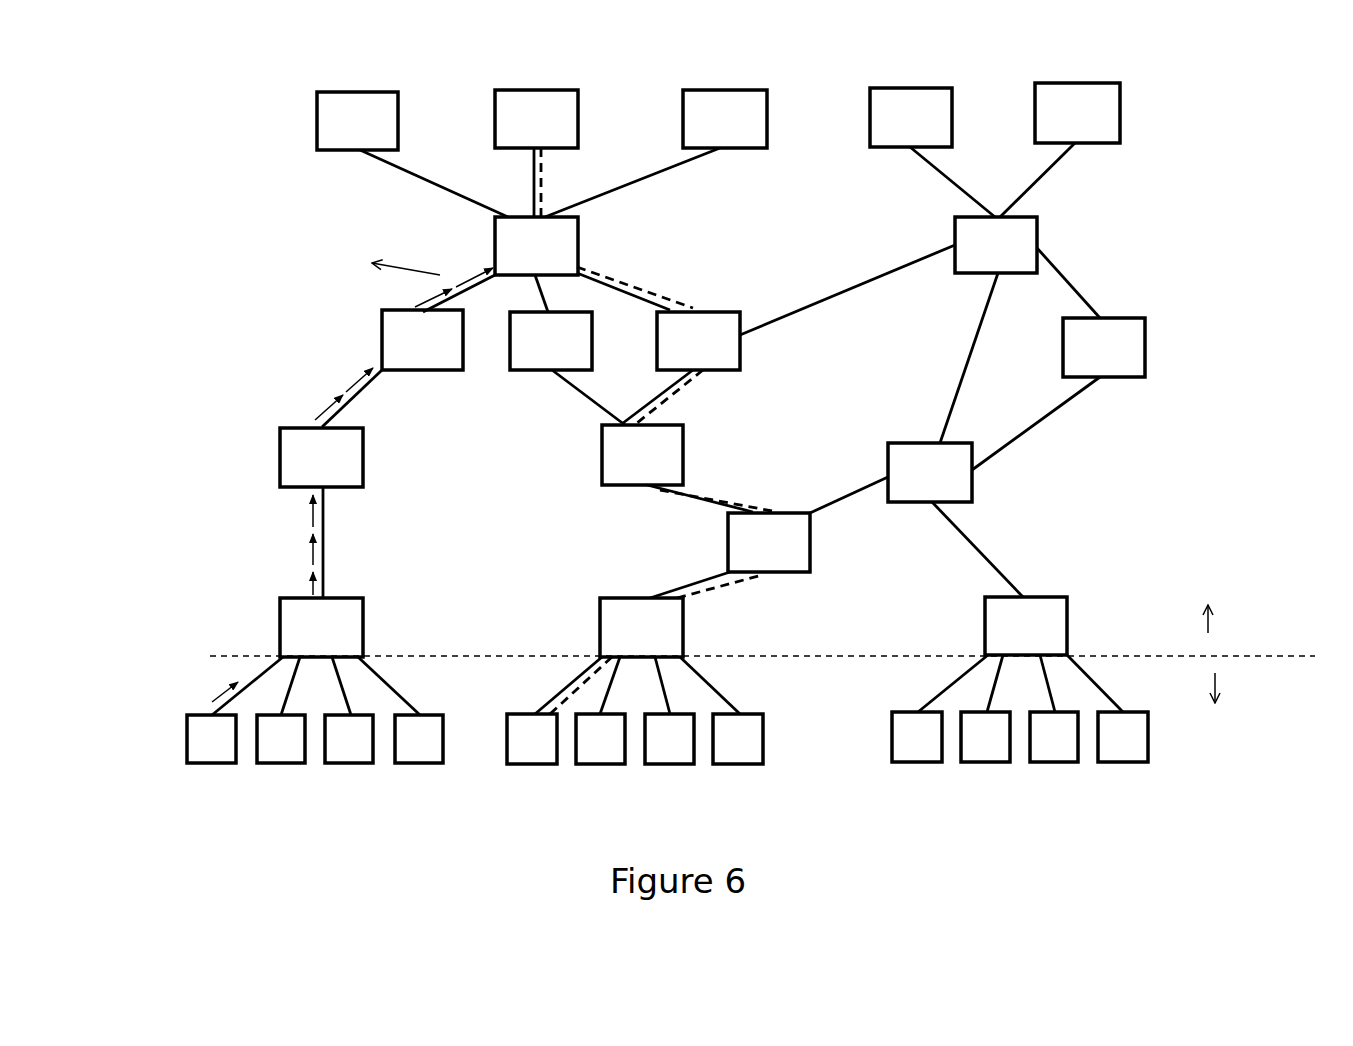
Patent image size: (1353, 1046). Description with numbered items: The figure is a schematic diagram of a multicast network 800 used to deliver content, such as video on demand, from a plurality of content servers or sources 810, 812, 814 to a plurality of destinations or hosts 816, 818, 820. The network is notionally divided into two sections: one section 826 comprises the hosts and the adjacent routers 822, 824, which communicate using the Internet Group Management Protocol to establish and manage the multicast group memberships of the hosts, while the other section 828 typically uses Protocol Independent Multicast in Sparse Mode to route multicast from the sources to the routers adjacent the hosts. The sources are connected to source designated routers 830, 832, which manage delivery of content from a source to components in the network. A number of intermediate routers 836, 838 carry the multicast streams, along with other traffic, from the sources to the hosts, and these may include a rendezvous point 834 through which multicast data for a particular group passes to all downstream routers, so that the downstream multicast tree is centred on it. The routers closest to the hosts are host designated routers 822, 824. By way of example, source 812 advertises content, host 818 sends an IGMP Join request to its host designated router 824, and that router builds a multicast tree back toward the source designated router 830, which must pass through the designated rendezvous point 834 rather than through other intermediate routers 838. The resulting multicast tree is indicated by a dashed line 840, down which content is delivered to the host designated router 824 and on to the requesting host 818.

The network 800 is at (242, 172).
The source 810 is at (357, 121).
The source 812 is at (536, 119).
The source 814 is at (911, 117).
The host 816 is at (211, 739).
The host 818 is at (532, 739).
The host 820 is at (917, 737).
The host designated router 822 is at (321, 627).
The host designated router 824 is at (641, 627).
The IGMP section of the network 826 is at (1265, 700).
The PIM-SM section of the network 828 is at (770, 617).
The source designated router 830 is at (536, 246).
The source designated router 832 is at (996, 245).
The rendezvous point 834 is at (698, 341).
The intermediate router 836 is at (930, 472).
The intermediate router 838 is at (551, 341).
The dashed line 840 is at (722, 488).